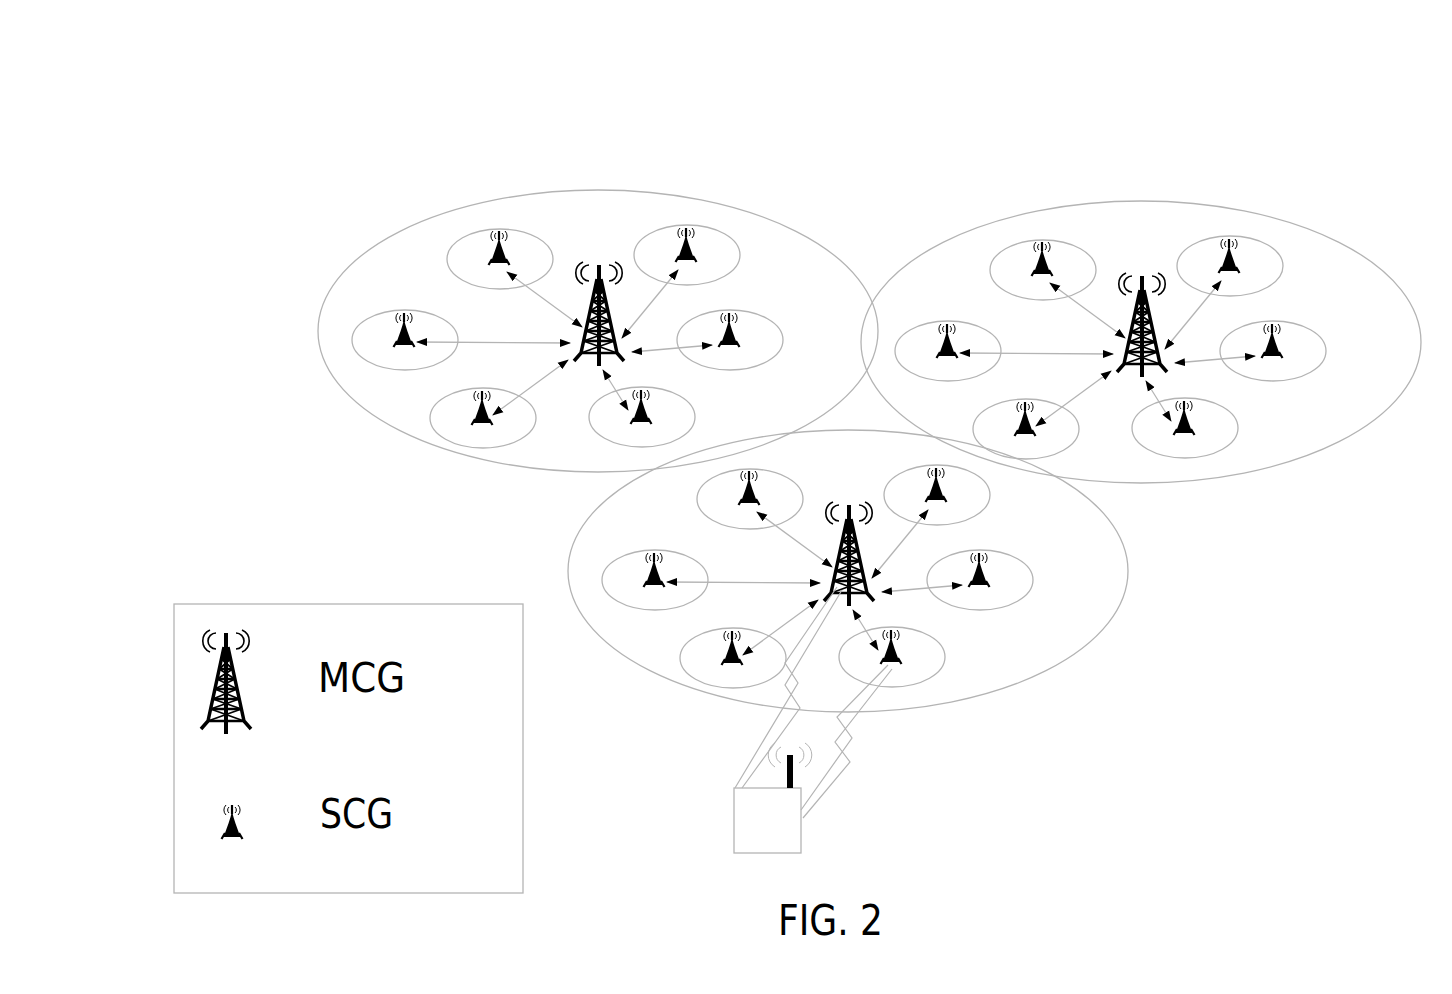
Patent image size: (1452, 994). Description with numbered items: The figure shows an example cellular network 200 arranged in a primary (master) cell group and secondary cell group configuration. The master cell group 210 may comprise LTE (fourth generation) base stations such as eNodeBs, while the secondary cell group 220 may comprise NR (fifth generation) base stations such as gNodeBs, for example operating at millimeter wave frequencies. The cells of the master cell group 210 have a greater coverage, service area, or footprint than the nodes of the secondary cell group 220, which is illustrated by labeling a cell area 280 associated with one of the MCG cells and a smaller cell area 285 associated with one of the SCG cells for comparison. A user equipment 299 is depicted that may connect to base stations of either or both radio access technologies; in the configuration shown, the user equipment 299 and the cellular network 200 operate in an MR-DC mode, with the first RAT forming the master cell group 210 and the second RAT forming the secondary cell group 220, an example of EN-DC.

The cellular network 200 is at (201, 43).
The master cell group 210 is at (245, 708).
The secondary cell group 220 is at (240, 837).
The cell area 280 is at (980, 697).
The cell area 285 is at (1035, 582).
The user equipment 299 is at (785, 848).